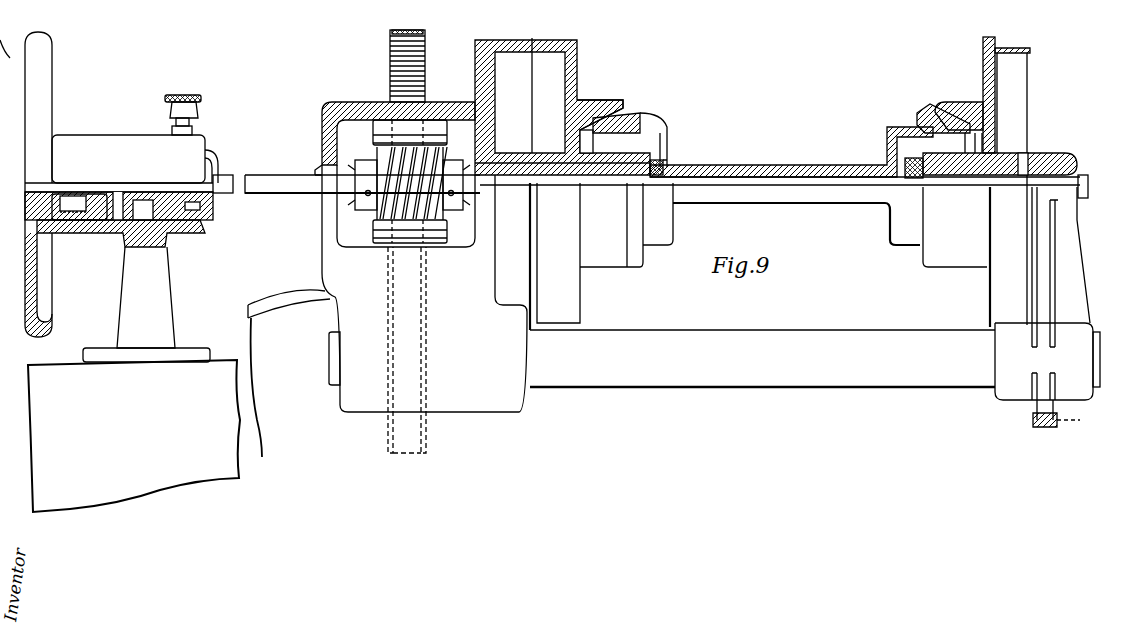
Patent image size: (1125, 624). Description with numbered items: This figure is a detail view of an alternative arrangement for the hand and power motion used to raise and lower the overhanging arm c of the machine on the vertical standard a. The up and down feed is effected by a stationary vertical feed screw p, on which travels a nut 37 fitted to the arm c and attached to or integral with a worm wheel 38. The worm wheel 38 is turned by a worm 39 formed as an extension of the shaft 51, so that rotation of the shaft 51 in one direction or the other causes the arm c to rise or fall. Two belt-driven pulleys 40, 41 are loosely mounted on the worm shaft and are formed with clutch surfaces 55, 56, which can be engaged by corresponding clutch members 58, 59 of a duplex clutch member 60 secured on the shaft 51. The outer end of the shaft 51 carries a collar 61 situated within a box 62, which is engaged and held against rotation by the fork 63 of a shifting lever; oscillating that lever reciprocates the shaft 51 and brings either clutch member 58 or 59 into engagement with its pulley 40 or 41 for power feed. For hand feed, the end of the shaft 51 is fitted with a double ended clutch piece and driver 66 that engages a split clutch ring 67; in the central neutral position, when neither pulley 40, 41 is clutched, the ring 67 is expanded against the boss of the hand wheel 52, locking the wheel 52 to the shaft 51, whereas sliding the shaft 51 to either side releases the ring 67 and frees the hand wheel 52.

The nut 37 is at (435, 140).
The worm wheel 38 is at (423, 231).
The worm shaft 39 is at (382, 212).
The pulley 40 is at (562, 102).
The pulley 41 is at (993, 68).
The shaft 51 is at (275, 187).
The hand wheel 52 is at (38, 276).
The clutch surface 55 is at (607, 107).
The clutch surface 56 is at (970, 102).
The clutch member 58 is at (637, 116).
The clutch member 59 is at (918, 113).
The duplex clutch member 60 is at (758, 180).
The collar 61 is at (217, 180).
The box 62 is at (170, 233).
The fork 63 is at (147, 194).
The double ended clutch piece and driver 66 is at (79, 194).
The split clutch ring 67 is at (90, 215).
The vertical feed screw P is at (415, 65).
The overhanging arm c is at (295, 317).
The vertical standard a is at (533, 91).